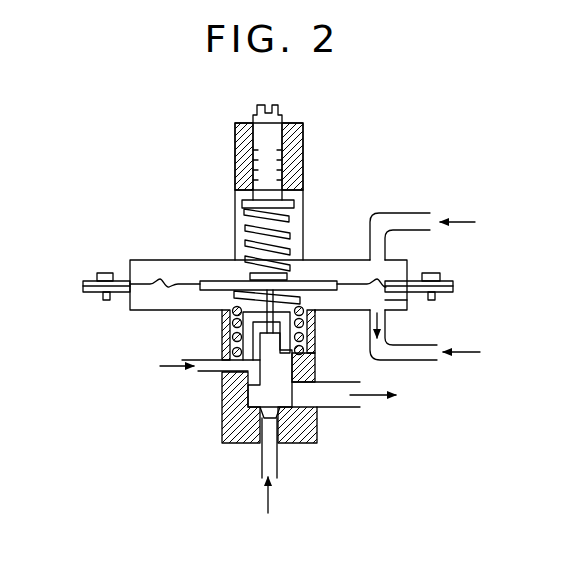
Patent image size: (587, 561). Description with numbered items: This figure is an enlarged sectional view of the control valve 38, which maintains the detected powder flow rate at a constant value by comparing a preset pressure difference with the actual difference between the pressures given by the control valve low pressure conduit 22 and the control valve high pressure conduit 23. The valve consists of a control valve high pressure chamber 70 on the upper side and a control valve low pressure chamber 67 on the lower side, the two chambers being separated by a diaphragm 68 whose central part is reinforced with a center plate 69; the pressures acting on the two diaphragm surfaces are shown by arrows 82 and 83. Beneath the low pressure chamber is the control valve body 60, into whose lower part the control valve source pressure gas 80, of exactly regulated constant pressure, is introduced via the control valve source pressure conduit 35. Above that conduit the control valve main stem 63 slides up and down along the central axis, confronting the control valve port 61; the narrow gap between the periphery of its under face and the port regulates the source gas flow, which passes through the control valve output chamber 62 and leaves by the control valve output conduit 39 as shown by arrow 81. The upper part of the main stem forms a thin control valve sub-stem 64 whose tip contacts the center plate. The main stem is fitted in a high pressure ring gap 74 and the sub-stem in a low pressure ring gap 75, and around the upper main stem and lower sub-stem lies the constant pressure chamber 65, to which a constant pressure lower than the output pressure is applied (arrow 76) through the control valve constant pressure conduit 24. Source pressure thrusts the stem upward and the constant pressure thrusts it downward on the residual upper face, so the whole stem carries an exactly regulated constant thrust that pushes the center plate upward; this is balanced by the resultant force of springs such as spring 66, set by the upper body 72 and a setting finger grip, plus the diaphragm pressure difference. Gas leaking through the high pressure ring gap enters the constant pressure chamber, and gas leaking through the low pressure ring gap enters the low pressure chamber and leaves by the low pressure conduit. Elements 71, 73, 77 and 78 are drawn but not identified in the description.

The control valve low pressure conduit 22 is at (415, 361).
The control valve high pressure conduit 23 is at (410, 213).
The control valve constant pressure conduit 24 is at (205, 372).
The control valve source pressure conduit 35 is at (262, 485).
The control valve 38 is at (93, 275).
The control valve output conduit 39 is at (348, 382).
The control valve body 60 is at (257, 443).
The control valve port 61 is at (289, 443).
The control valve output chamber 62 is at (278, 407).
The control valve main stem 63 is at (222, 427).
The control valve sub-stem 64 is at (222, 336).
The constant pressure chamber 65 is at (222, 349).
The spring 66 is at (312, 319).
The control valve low pressure chamber 67 is at (402, 308).
The diaphragm 68 is at (147, 284).
The center plate 69 is at (198, 250).
The control valve high pressure chamber 70 is at (400, 254).
The spring 71 is at (290, 235).
The upper body 72 is at (303, 137).
The adjusting screw 73 is at (268, 126).
The high pressure ring gap 74 is at (222, 384).
The low pressure ring gap 75 is at (222, 319).
The arrow 76 is at (175, 370).
The fluid flow 77 is at (367, 324).
The inlet passage 78 is at (262, 457).
The control valve source pressure gas 80 is at (270, 496).
The control output gas 81 is at (378, 397).
The arrow 82 is at (462, 222).
The arrow 83 is at (470, 350).